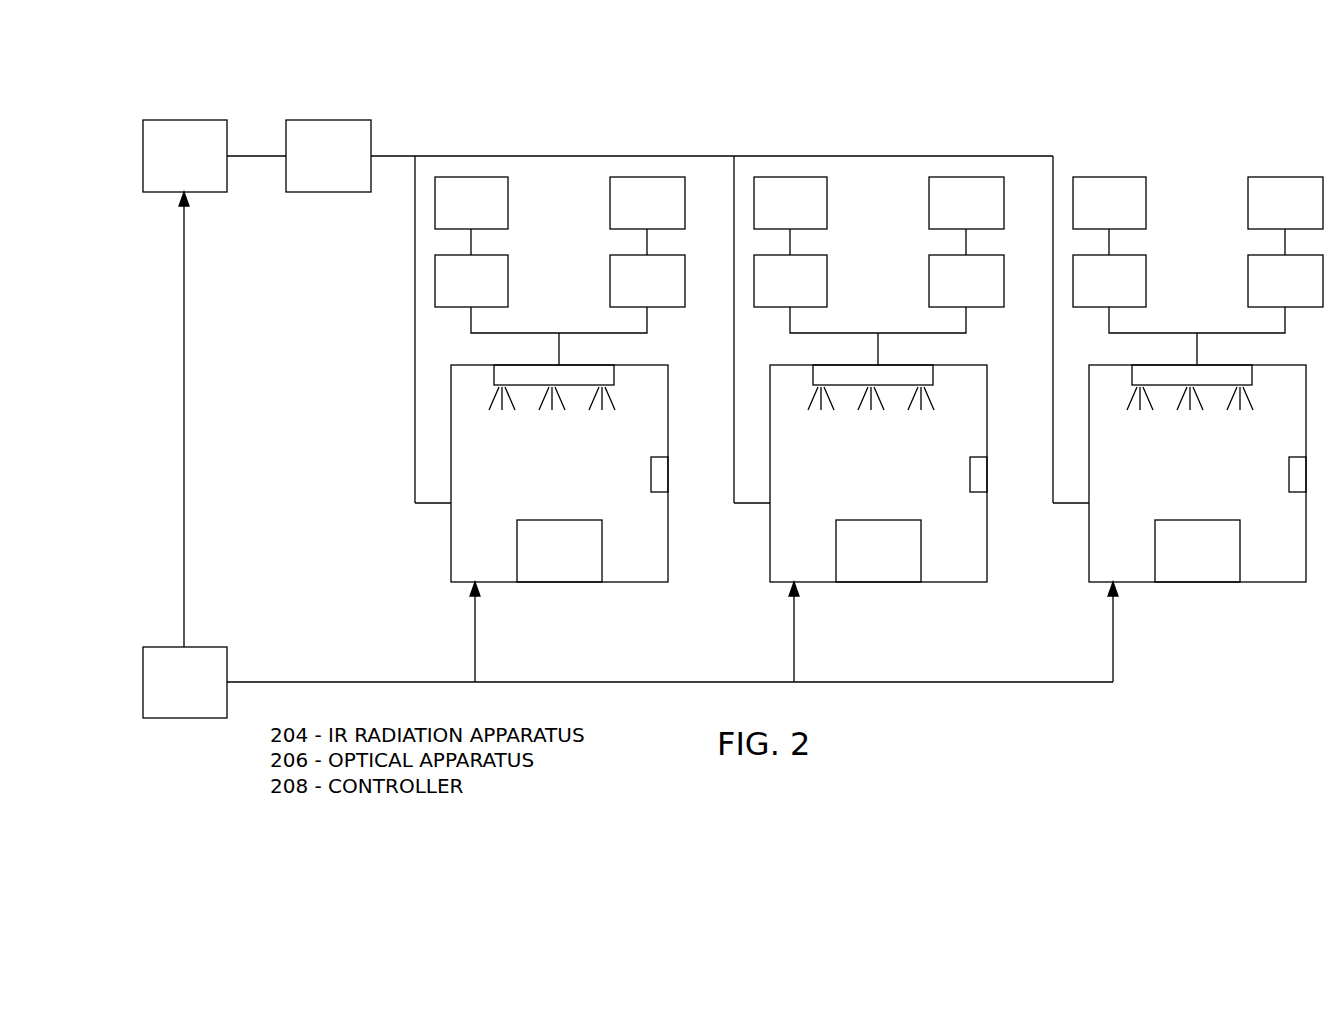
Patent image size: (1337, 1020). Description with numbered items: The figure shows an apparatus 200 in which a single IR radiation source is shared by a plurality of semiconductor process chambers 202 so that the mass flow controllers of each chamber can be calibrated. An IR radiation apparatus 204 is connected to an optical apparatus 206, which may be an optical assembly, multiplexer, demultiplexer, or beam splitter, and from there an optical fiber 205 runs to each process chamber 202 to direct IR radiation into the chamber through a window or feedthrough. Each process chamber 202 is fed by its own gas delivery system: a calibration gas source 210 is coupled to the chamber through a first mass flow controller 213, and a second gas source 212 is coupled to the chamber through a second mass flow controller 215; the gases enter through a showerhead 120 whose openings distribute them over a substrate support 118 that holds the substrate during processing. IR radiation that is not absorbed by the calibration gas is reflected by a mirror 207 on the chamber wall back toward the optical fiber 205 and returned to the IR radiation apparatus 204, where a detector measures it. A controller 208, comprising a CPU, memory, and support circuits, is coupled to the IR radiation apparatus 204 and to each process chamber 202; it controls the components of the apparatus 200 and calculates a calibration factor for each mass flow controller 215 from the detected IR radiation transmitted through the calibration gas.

The apparatus 200 is at (966, 90).
The IR radiation apparatus 204 is at (167, 167).
The optical fiber 205 is at (578, 156).
The optical apparatus 206 is at (310, 167).
The controller 208 is at (167, 693).
The calibration gas source 210 is at (790, 203).
The second gas source 212 is at (966, 203).
The first mass flow controller 213 is at (790, 281).
The second mass flow controller 215 is at (966, 281).
The showerhead 120 is at (871, 411).
The mirror 207 is at (937, 476).
The substrate support 118 is at (1211, 566).
The process chamber 202 is at (878, 510).